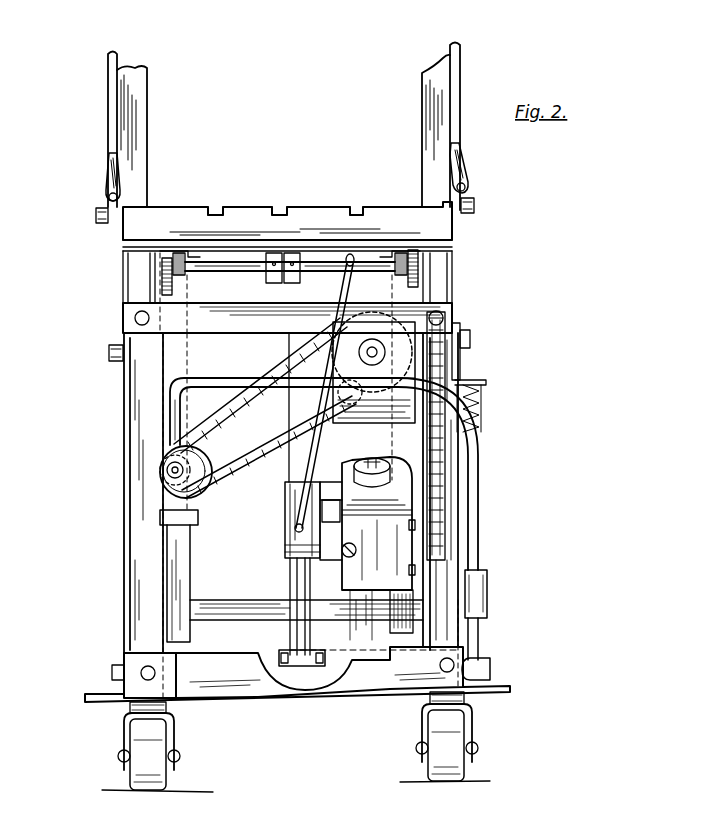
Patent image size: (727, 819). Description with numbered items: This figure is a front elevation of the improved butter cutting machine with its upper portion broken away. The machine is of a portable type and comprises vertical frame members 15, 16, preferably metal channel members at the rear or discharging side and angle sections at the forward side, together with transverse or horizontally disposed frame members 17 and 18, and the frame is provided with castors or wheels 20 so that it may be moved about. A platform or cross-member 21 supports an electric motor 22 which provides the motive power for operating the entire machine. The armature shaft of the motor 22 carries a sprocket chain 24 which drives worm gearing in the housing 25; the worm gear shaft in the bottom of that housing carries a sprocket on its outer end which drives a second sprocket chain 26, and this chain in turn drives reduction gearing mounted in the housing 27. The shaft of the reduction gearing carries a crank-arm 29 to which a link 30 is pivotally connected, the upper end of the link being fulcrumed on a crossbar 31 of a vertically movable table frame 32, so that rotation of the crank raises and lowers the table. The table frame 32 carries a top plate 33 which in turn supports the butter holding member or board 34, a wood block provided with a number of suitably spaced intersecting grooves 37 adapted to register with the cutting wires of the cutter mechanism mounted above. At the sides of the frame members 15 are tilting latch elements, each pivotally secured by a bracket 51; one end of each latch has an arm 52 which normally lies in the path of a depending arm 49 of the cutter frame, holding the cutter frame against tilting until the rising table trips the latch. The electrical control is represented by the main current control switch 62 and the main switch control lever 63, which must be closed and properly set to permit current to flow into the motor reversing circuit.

The vertical frame member 15 is at (148, 118).
The vertical frame member 16 is at (130, 540).
The transverse frame member 17 is at (85, 694).
The transverse frame member 18 is at (111, 362).
The castor 20 is at (128, 772).
The platform 21 is at (198, 517).
The electric motor 22 is at (204, 482).
The sprocket chain 24 is at (226, 418).
The housing 25 is at (367, 535).
The sprocket chain 26 is at (441, 508).
The housing 27 is at (228, 380).
The crank-arm 29 is at (312, 650).
The link 30 is at (291, 648).
The crossbar 31 is at (232, 262).
The table frame 32 is at (162, 260).
The top plate 33 is at (323, 240).
The butter holding member 34 is at (305, 207).
The groove 37 is at (215, 207).
The depending arm 49 is at (110, 113).
The bracket 51 is at (108, 226).
The arm 52 is at (106, 180).
The main current control switch 62 is at (357, 467).
The main switch control lever 63 is at (420, 286).